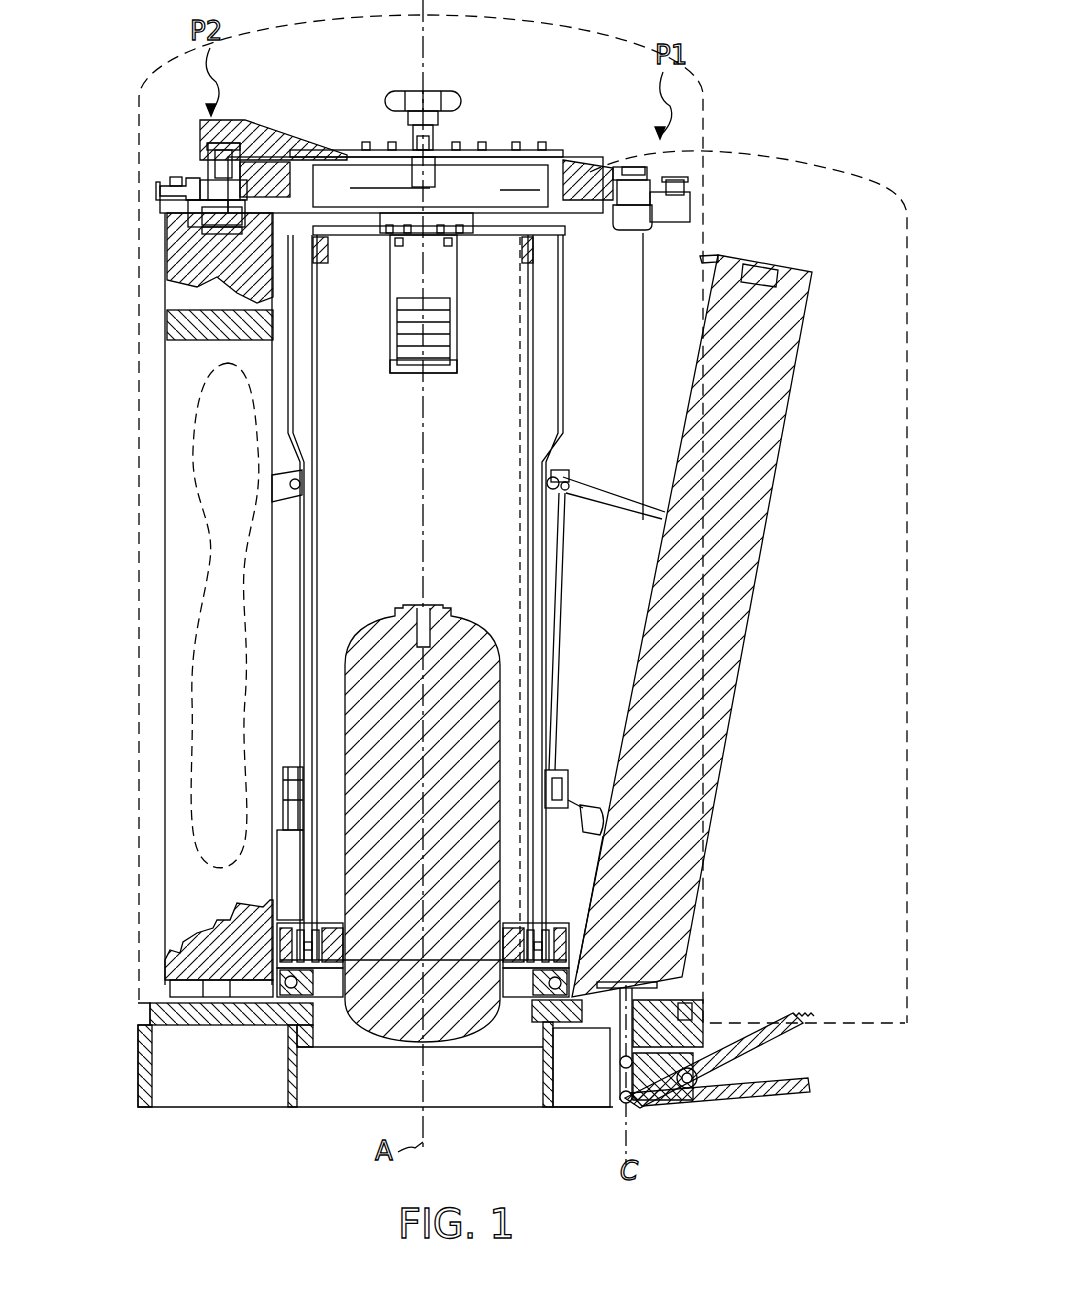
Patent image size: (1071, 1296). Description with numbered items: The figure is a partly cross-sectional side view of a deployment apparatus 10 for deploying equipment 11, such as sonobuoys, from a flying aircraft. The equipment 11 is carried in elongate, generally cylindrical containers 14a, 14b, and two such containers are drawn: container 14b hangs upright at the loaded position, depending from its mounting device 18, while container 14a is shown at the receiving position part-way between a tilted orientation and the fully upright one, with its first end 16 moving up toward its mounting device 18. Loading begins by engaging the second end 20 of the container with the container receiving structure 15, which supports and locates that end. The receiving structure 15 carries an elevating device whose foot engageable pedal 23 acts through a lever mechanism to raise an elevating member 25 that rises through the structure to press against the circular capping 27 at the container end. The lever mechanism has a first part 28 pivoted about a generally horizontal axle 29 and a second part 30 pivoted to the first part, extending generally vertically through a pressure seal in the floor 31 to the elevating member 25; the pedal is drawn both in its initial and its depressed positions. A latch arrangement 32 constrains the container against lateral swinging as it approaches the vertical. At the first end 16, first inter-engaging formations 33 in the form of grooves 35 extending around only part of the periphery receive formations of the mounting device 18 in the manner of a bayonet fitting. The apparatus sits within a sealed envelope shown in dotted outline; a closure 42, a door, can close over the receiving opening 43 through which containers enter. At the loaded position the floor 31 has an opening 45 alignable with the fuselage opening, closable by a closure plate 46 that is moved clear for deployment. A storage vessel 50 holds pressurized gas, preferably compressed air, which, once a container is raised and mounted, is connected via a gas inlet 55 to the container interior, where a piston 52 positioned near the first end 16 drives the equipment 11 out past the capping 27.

The deployment apparatus 10 is at (126, 608).
The equipment 11 is at (200, 793).
The container 14a is at (787, 410).
The container 14b is at (165, 487).
The container receiving structure 15 is at (592, 1095).
The first end 16 is at (170, 275).
The mounting device 18 is at (160, 189).
The second end 20 is at (190, 940).
The foot engageable pedal 23 is at (792, 1082).
The elevating member 25 is at (640, 984).
The capping 27 is at (200, 1000).
The first part 28 is at (748, 1085).
The axle 29 is at (685, 1088).
The second part 30 is at (618, 1044).
The floor 31 is at (548, 1036).
The latch arrangement 32 is at (583, 786).
The first inter-engaging formations 33 is at (168, 215).
The grooves 35 is at (718, 258).
The closure 42 is at (838, 178).
The receiving opening 43 is at (625, 163).
The opening 45 is at (152, 1103).
The closure plate 46 is at (252, 1005).
The storage vessel 50 is at (470, 632).
The piston 52 is at (170, 325).
The gas inlet 55 is at (245, 215).